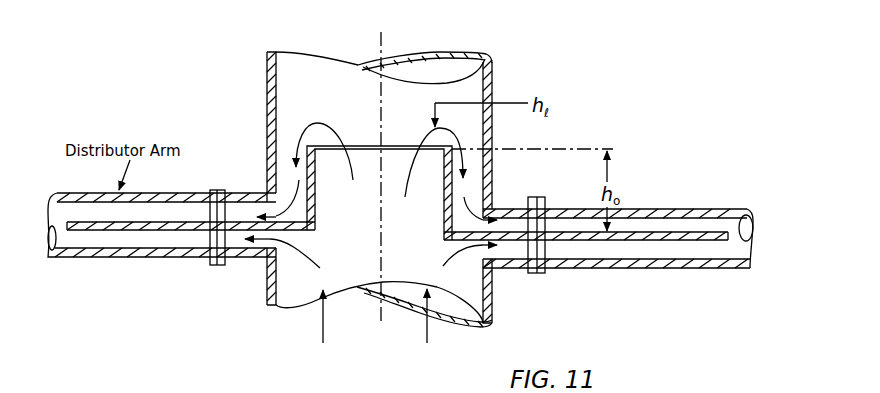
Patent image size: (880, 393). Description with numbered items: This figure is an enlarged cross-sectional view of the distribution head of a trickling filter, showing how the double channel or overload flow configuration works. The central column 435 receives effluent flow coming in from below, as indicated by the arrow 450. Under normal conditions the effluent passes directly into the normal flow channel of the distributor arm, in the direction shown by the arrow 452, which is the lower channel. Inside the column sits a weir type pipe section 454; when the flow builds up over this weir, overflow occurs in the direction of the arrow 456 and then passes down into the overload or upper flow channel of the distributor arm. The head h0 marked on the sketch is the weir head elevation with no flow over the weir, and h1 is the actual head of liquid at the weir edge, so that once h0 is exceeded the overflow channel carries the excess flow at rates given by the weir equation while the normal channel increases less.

The central column 435 is at (491, 144).
The incoming flow arrow 450 is at (427, 327).
The normal flow arrow 452 is at (443, 266).
The weir type pipe section 454 is at (355, 214).
The overflow arrow 456 is at (408, 172).